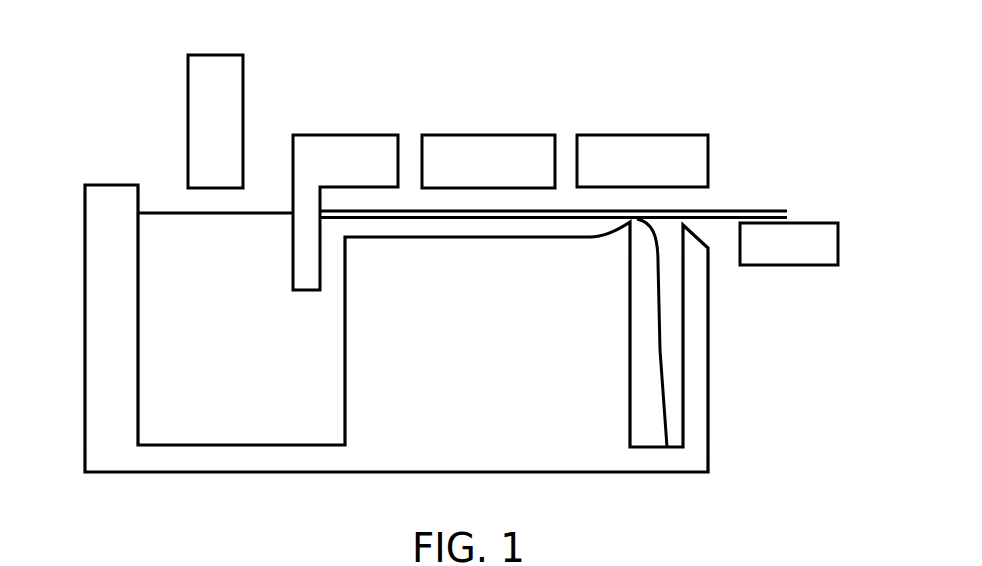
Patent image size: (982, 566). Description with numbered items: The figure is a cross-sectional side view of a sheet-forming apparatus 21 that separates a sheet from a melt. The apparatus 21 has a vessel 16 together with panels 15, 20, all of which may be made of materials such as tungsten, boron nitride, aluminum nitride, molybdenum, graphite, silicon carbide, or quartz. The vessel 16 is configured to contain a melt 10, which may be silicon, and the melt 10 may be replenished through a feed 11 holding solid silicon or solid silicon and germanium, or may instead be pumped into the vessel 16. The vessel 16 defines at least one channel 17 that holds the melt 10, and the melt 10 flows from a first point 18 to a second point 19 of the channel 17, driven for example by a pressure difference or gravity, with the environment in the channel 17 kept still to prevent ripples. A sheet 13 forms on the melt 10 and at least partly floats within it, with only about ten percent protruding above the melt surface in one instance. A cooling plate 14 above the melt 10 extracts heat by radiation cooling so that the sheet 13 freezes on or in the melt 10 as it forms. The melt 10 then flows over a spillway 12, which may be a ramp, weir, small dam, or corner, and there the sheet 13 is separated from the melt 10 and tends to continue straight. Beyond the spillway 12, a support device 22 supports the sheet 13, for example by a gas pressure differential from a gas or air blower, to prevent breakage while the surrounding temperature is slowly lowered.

The melt 10 is at (215, 288).
The feed 11 is at (215, 121).
The spillway 12 is at (617, 235).
The sheet 13 is at (732, 208).
The cooling plate 14 is at (488, 161).
The panel 15 is at (345, 212).
The vessel 16 is at (85, 295).
The channel 17 is at (412, 180).
The first point 18 is at (360, 253).
The second point 19 is at (585, 255).
The panel 20 is at (642, 161).
The sheet-forming apparatus 21 is at (658, 80).
The support device 22 is at (789, 244).